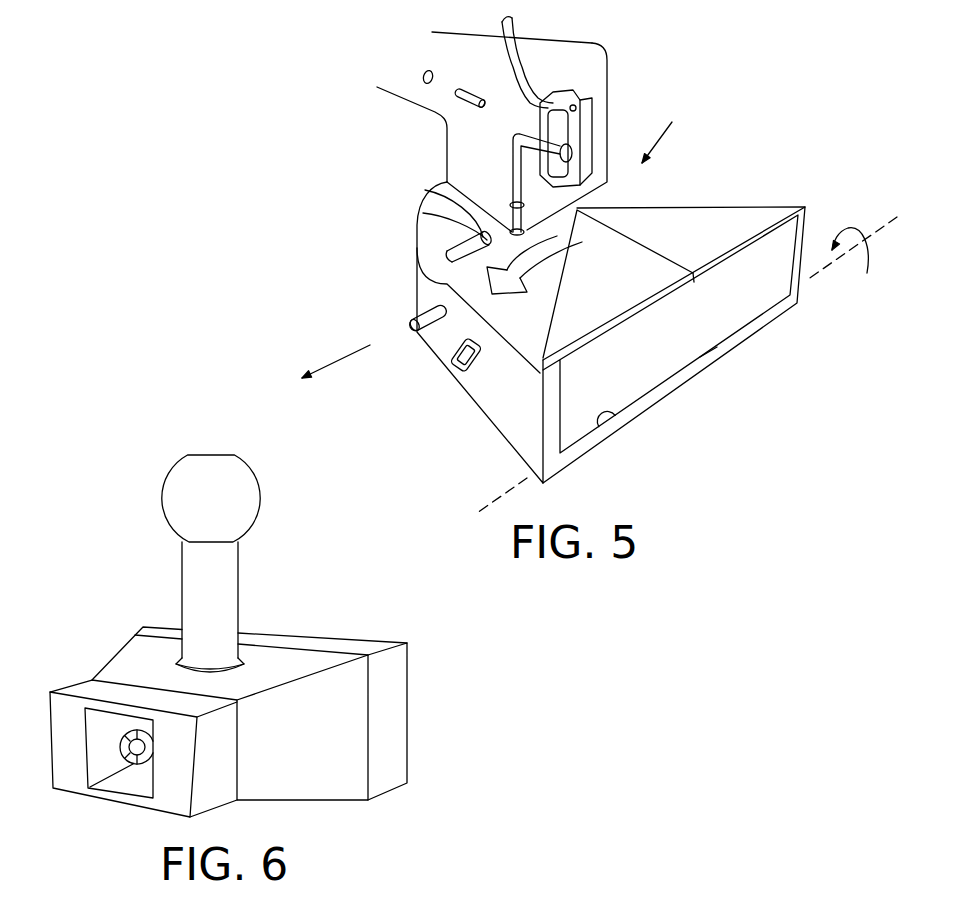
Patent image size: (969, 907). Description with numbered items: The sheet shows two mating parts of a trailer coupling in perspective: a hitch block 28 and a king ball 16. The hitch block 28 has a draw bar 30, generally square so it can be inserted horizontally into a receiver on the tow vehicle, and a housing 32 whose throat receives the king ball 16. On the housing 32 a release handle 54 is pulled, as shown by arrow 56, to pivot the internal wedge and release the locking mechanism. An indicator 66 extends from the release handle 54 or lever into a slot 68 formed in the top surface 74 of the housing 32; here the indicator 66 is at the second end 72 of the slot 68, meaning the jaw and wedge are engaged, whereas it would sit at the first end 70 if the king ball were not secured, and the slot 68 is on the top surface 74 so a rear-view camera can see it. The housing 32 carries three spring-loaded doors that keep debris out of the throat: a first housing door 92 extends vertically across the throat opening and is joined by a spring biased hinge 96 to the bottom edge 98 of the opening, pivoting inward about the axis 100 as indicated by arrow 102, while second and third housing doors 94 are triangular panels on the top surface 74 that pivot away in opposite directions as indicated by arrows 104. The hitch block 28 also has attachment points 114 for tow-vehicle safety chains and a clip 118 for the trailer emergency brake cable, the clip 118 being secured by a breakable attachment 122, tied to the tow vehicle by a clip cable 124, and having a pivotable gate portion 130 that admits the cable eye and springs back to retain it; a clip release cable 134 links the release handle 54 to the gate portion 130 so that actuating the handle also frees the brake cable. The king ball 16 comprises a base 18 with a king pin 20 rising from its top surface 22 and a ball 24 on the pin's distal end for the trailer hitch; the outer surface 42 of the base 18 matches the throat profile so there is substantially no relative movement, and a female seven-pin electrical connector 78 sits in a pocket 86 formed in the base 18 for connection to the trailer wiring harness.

In FIG. 6, the king ball 16 is at (107, 662).
In FIG. 6, the base 18 is at (318, 780).
In FIG. 6, the king pin 20 is at (215, 592).
In FIG. 6, the top surface 22 is at (142, 650).
In FIG. 6, the ball 24 is at (192, 502).
In FIG. 5, the hitch block 28 is at (680, 100).
In FIG. 5, the draw bar 30 is at (408, 90).
In FIG. 5, the housing 32 is at (510, 417).
In FIG. 6, the outer surface 42 is at (342, 700).
In FIG. 5, the release handle 54 is at (420, 314).
In FIG. 5, the arrow 56 is at (349, 354).
In FIG. 5, the indicator 66 is at (445, 215).
In FIG. 5, the slot 68 is at (450, 240).
In FIG. 5, the first end 70 is at (450, 260).
In FIG. 5, the second end 72 is at (447, 192).
In FIG. 5, the top surface 74 is at (702, 195).
In FIG. 6, the female 7-pin electrical connector 78 is at (133, 748).
In FIG. 6, the pocket 86 is at (102, 736).
In FIG. 5, the first housing door 92 is at (743, 303).
In FIG. 5, the second and third housing doors 94 is at (735, 225).
In FIG. 5, the spring biased hinge 96 is at (717, 347).
In FIG. 5, the bottom edge 98 is at (618, 412).
In FIG. 5, the axis 100 is at (897, 217).
In FIG. 5, the arrow 102 is at (868, 272).
In FIG. 5, the arrows 104 is at (485, 288).
In FIG. 5, the attachment points 114 is at (453, 363).
In FIG. 5, the clip 118 is at (563, 103).
In FIG. 5, the breakable attachment 122 is at (572, 55).
In FIG. 5, the clip cable 124 is at (513, 25).
In FIG. 5, the pivotable gate portion 130 is at (587, 125).
In FIG. 5, the clip release cable 134 is at (513, 177).